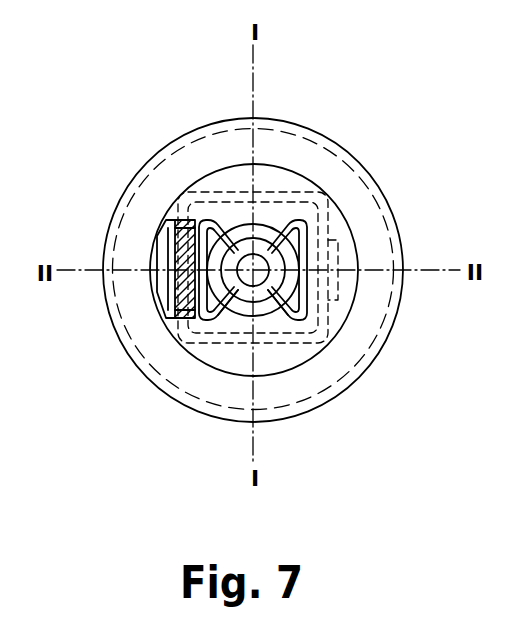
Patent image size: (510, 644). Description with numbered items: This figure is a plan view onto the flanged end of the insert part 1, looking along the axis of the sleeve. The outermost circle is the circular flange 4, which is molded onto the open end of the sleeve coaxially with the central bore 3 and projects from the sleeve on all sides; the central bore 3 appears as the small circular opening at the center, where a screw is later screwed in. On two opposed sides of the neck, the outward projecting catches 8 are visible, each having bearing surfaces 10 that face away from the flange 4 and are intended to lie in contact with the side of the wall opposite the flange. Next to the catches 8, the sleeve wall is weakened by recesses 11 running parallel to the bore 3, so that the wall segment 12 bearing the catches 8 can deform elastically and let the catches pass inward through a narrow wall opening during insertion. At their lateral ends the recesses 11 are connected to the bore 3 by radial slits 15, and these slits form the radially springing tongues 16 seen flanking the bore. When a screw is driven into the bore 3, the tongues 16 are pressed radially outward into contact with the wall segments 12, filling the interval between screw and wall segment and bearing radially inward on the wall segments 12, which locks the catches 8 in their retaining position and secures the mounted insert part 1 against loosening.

The insert part 1 is at (347, 135).
The central bore 3 is at (246, 290).
The circular flange 4 is at (290, 143).
The catches 8 is at (168, 283).
The bearing surfaces 10 is at (177, 247).
The recesses 11 is at (179, 236).
The wall segment 12 is at (178, 300).
The radial slits 15 is at (298, 240).
The tongues 16 is at (219, 298).